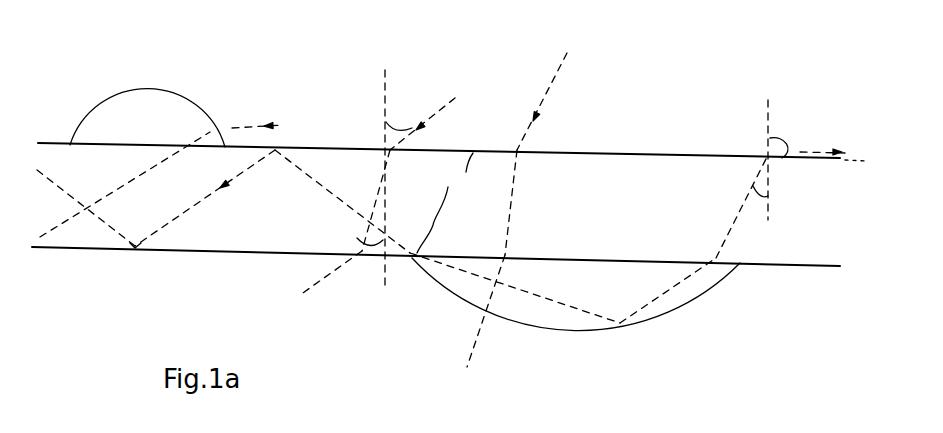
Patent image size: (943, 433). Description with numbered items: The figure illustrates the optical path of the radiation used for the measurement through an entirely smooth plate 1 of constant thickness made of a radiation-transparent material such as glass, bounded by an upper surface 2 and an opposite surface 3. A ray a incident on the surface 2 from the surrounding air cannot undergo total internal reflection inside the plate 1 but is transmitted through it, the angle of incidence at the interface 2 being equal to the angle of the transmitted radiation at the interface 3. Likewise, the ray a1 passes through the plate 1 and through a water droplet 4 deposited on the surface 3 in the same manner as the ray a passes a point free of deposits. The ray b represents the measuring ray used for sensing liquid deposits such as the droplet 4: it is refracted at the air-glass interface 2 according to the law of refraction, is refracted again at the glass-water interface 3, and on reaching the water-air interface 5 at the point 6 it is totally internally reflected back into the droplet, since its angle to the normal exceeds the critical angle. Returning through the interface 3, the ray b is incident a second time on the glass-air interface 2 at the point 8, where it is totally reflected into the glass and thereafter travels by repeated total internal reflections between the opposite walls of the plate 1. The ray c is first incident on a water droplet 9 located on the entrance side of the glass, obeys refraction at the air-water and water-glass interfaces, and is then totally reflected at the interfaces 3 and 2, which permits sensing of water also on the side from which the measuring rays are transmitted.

The plate 1 is at (449, 211).
The surface 2 is at (685, 155).
The surface 3 is at (783, 266).
The droplet 4 is at (584, 325).
The water-air interface 5 is at (638, 280).
The point of incidence 6 is at (617, 328).
The point 8 is at (278, 148).
The water droplet 9 is at (155, 122).
The ray a is at (445, 108).
The ray a1 is at (557, 72).
The ray b is at (815, 150).
The ray c is at (232, 128).